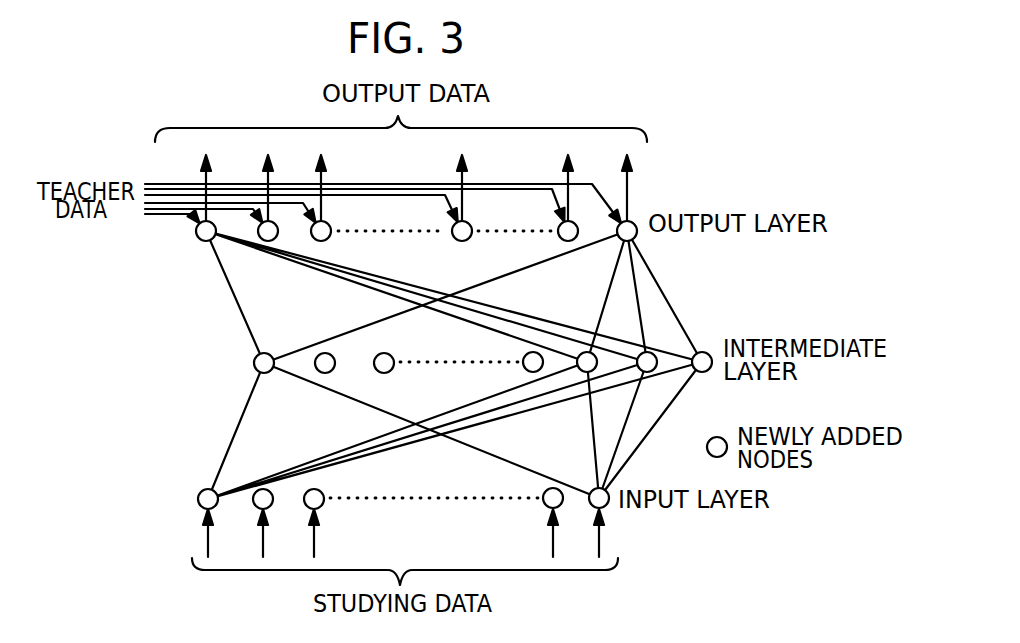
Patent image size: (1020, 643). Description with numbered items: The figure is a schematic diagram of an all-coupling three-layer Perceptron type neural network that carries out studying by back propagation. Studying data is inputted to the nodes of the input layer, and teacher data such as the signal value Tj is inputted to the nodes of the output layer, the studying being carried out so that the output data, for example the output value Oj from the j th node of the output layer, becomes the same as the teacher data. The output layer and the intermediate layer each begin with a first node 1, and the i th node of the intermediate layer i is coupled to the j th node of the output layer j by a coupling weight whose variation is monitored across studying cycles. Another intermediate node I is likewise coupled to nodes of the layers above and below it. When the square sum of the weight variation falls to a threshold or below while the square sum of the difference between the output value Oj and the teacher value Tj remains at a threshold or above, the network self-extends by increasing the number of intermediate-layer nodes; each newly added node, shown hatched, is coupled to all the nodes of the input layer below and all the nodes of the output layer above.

The first node 1 is at (200, 241).
The j th node of the output layer j is at (634, 223).
The i th node of the intermediate layer i is at (391, 370).
The I th node of the intermediate layer I is at (585, 352).
The output value from the j th node Oj is at (480, 183).
The teacher data signal value for the j th node Tj is at (301, 213).